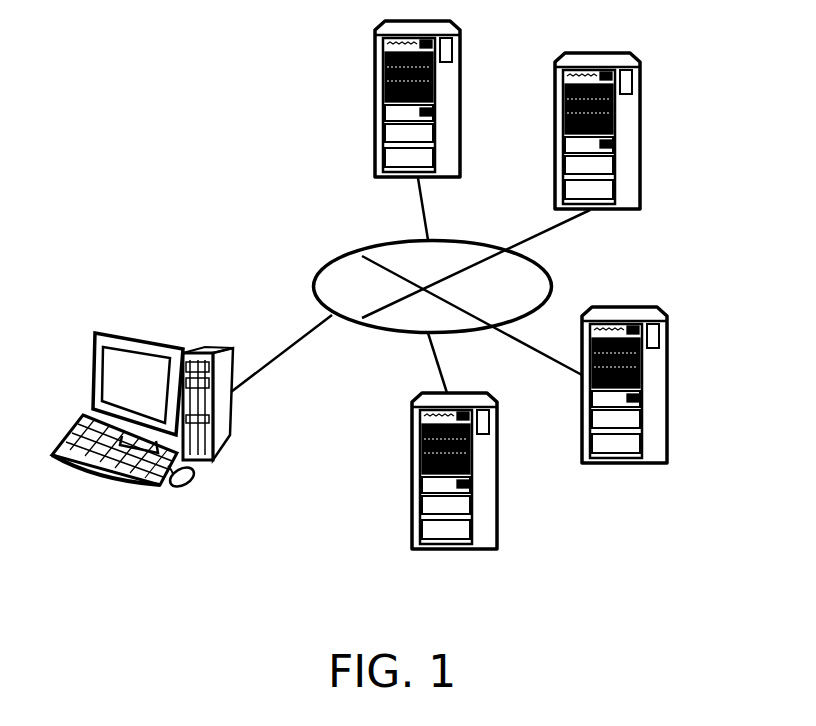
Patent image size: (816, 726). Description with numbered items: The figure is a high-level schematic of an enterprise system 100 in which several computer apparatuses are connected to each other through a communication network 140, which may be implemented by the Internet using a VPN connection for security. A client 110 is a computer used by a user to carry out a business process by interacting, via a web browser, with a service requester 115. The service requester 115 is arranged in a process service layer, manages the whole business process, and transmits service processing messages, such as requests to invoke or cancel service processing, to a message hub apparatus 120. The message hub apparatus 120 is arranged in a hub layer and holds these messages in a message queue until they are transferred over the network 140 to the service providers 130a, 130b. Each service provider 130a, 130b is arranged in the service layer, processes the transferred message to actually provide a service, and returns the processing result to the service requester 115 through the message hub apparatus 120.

The enterprise system 100 is at (226, 198).
The client 110 is at (226, 348).
The service requester 115 is at (410, 478).
The message hub apparatus 120 is at (667, 362).
The service provider 130a is at (375, 100).
The service provider 130b is at (640, 104).
The communication network 140 is at (552, 281).